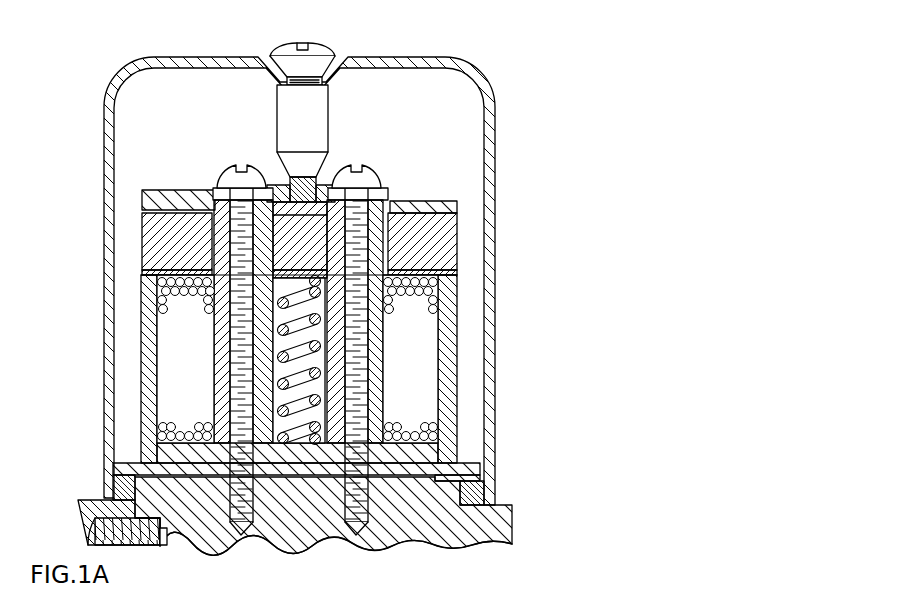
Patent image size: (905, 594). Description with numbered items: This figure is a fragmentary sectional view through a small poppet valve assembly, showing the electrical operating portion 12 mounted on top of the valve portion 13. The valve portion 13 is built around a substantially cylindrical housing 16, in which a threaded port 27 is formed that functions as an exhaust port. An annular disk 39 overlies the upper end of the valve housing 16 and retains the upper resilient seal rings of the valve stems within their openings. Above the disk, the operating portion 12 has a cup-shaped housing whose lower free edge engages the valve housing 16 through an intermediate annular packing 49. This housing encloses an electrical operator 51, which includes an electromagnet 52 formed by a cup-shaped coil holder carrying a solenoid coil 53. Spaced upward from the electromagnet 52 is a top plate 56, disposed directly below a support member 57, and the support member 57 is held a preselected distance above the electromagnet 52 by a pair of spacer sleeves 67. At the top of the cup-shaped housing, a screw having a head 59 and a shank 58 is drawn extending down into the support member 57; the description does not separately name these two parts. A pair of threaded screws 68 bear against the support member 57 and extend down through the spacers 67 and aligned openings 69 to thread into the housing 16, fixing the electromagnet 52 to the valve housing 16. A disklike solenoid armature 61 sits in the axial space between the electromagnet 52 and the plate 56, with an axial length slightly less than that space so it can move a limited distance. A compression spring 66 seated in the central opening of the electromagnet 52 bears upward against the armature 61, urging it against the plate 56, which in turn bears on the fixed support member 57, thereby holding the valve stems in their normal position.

The electrical operating portion 12 is at (506, 244).
The valve portion 13 is at (522, 509).
The housing 16 is at (427, 533).
The second port 27 is at (94, 530).
The annular disk 39 is at (115, 470).
The annular packing 49 is at (120, 491).
The electrical operator 51 is at (468, 383).
The electromagnet 52 is at (447, 328).
The solenoid coil 53 is at (214, 307).
The top plate 56 is at (450, 202).
The support member 57 is at (318, 194).
The screw shank 58 is at (291, 128).
The screw head 59 is at (300, 62).
The solenoid armature 61 is at (205, 216).
The compression spring 66 is at (302, 385).
The spacer sleeves 67 is at (392, 210).
The threaded screws 68 is at (355, 197).
The aligned openings 69 is at (362, 352).